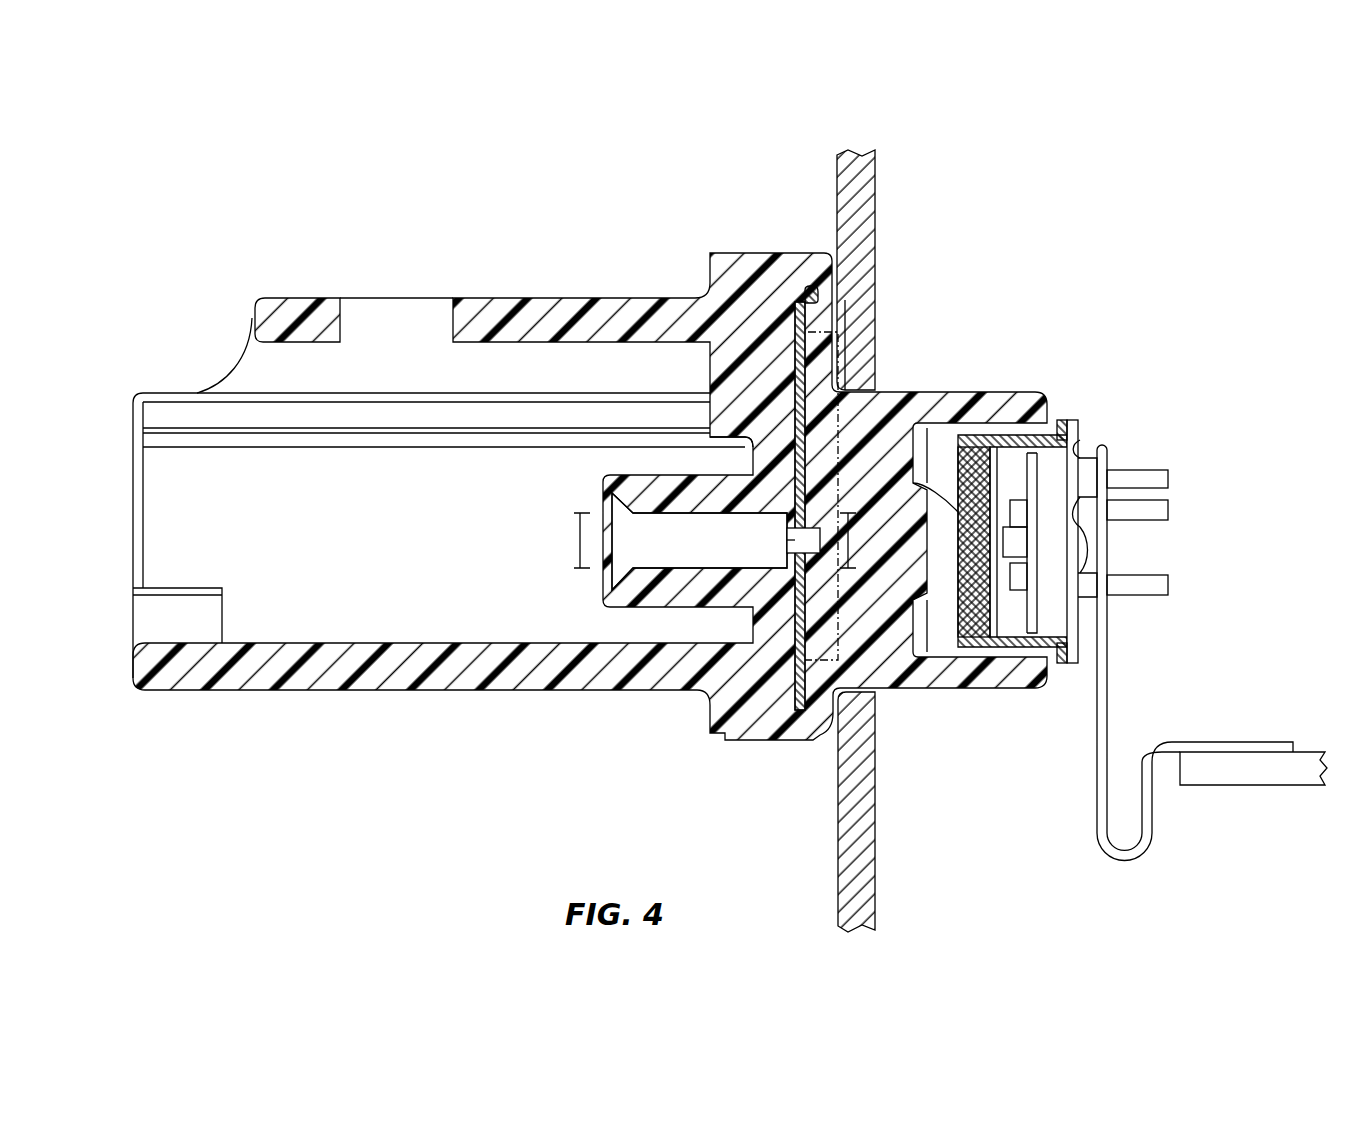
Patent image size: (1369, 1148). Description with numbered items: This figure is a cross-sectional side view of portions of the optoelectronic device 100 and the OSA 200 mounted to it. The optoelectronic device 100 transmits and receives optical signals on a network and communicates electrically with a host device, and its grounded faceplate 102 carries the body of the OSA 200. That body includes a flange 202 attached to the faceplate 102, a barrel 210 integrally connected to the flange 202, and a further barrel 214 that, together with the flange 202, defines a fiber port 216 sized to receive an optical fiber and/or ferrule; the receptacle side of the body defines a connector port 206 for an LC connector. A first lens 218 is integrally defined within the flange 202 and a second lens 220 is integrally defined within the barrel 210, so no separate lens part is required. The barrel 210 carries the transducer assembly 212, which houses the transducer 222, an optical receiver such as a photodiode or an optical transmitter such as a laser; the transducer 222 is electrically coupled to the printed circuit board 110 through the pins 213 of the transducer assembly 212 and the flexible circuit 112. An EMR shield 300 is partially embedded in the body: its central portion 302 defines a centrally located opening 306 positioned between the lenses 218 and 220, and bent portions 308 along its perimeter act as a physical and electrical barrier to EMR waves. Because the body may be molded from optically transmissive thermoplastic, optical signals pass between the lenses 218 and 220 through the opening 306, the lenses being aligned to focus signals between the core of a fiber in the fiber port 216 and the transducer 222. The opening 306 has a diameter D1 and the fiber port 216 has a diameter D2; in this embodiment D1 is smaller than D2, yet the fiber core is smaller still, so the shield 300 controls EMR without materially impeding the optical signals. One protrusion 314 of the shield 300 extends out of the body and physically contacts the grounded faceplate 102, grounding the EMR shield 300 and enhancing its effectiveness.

The optoelectronic device 100 is at (1064, 196).
The faceplate 102 is at (876, 172).
The printed circuit board 110 is at (1243, 786).
The flexible circuit 112 is at (1108, 660).
The OSA 200 is at (798, 241).
The flange 202 is at (750, 253).
The connector port 206 is at (222, 513).
The barrel 210 is at (990, 393).
The transducer assembly 212 is at (1149, 545).
The pins 213 is at (1166, 508).
The barrel 214 is at (660, 475).
The fiber port 216 is at (658, 538).
The first lens 218 is at (783, 558).
The second lens 220 is at (985, 455).
The transducer 222 is at (1040, 465).
The EMR shield 300 is at (812, 332).
The central portion 302 is at (801, 452).
The opening 306 is at (790, 540).
The bent portions 308 is at (820, 295).
The protrusion 314 is at (847, 347).
The diameter of the opening D1 is at (848, 545).
The diameter of the fiber port D2 is at (578, 538).